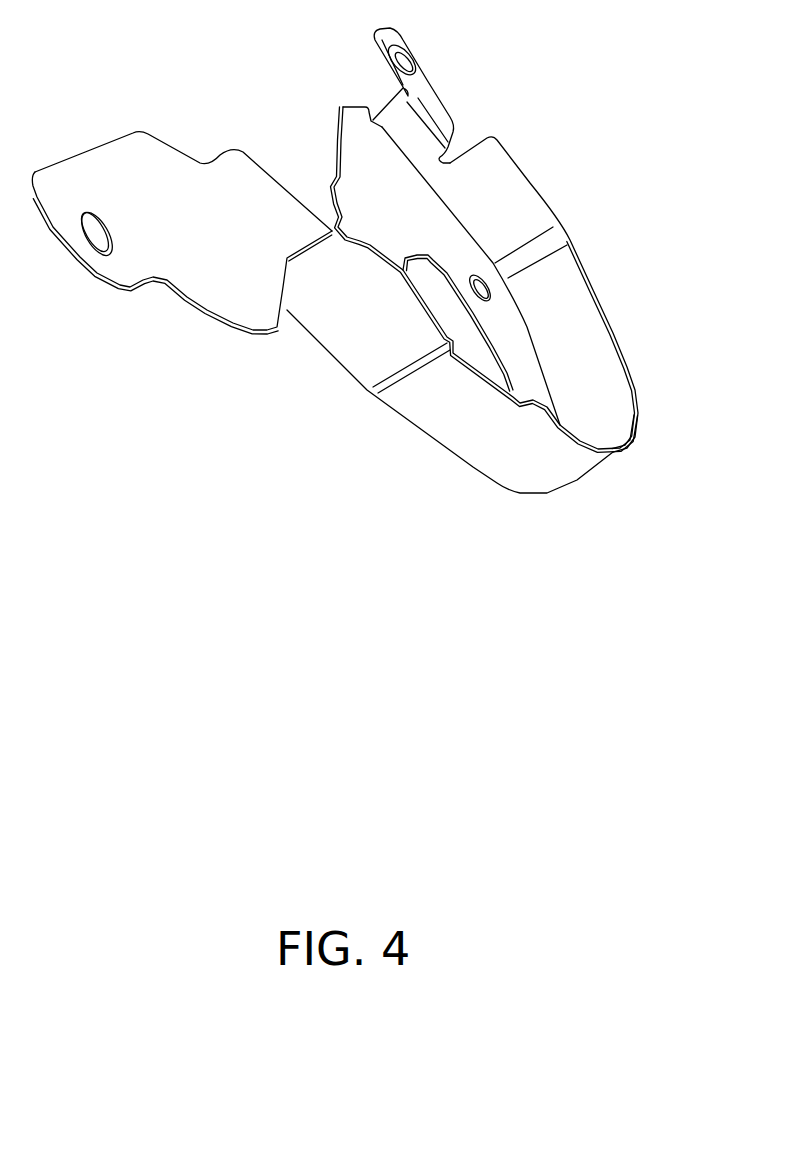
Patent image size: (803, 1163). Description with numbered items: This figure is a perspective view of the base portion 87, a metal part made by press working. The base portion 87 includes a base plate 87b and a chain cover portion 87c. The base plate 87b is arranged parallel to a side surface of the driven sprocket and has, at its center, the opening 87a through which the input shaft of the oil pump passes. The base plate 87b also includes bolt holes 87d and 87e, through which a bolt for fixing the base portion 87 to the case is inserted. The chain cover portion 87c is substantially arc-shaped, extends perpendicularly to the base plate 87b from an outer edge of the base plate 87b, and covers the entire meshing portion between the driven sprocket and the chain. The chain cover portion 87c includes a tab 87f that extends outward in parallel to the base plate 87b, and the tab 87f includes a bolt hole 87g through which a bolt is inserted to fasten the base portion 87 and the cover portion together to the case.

The base portion 87 is at (335, 290).
The opening 87a is at (484, 337).
The base plate 87b is at (362, 173).
The chain cover portion 87c is at (580, 482).
The bolt hole 87d is at (103, 221).
The bolt hole 87e is at (490, 274).
The tab 87f is at (436, 94).
The bolt hole 87g is at (413, 53).